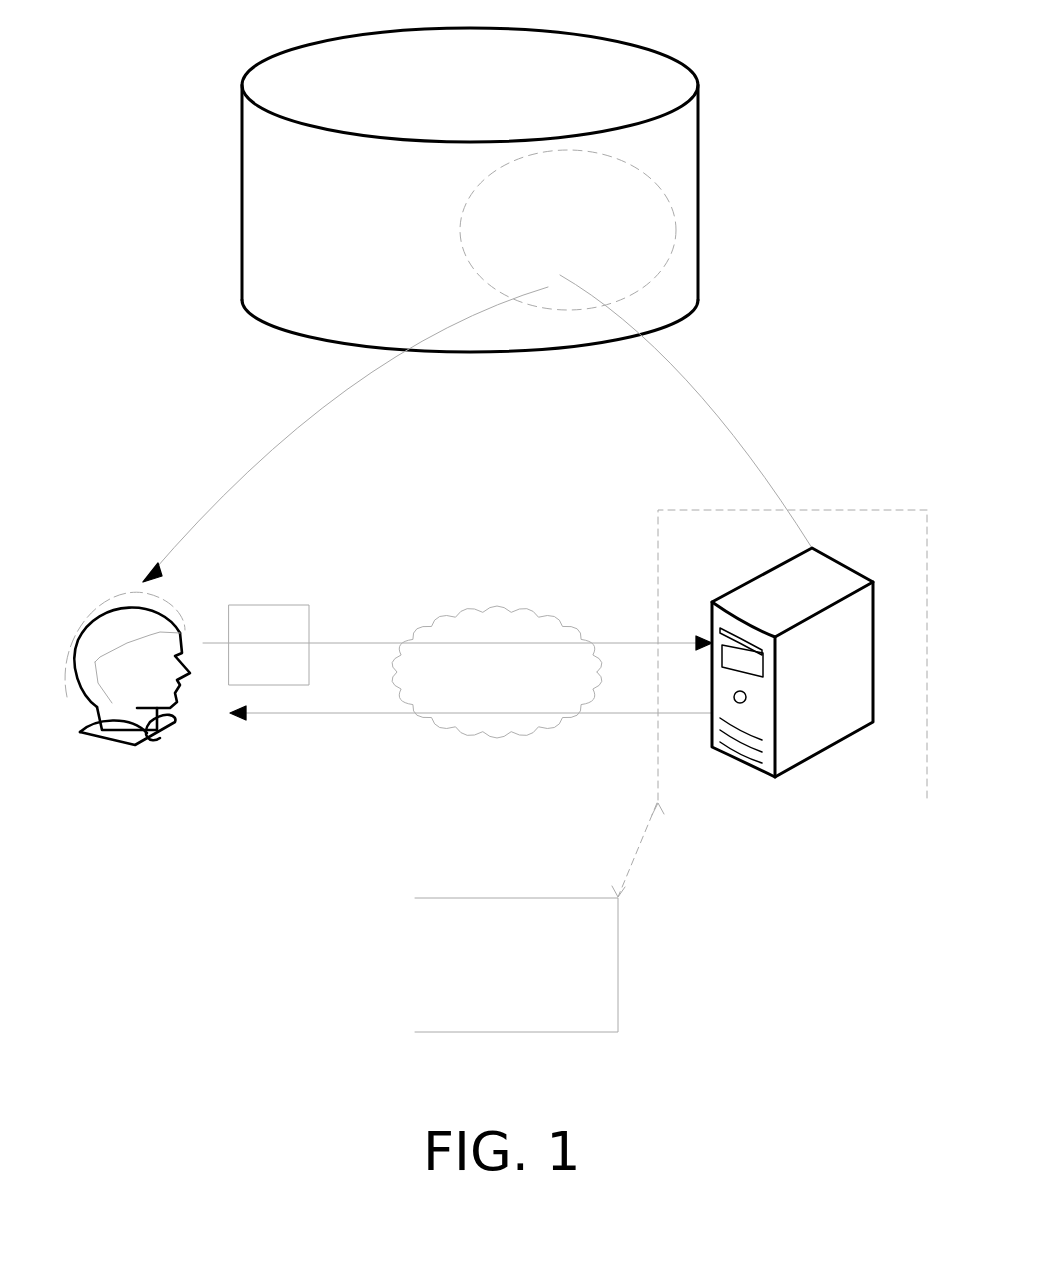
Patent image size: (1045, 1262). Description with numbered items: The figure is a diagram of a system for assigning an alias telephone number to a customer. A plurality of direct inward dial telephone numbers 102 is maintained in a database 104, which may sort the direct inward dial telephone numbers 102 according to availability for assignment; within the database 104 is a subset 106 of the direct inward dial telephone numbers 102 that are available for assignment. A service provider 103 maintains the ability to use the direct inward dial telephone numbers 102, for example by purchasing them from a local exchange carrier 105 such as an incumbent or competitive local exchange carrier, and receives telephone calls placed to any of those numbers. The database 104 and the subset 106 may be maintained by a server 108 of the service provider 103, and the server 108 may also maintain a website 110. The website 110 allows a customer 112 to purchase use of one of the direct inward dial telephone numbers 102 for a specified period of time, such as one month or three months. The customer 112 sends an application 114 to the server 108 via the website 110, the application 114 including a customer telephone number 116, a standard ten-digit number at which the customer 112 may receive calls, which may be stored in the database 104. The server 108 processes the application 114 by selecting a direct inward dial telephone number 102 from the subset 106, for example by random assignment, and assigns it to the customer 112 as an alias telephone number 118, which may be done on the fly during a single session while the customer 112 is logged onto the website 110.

The direct inward dial telephone numbers 102 is at (737, 233).
The service provider 103 is at (695, 508).
The database 104 is at (240, 142).
The local exchange carrier 105 is at (535, 976).
The subset 106 is at (608, 153).
The server 108 is at (875, 617).
The website 110 is at (497, 603).
The customer 112 is at (93, 605).
The application 114 is at (243, 603).
The customer telephone number 116 is at (293, 608).
The alias telephone number 118 is at (208, 730).